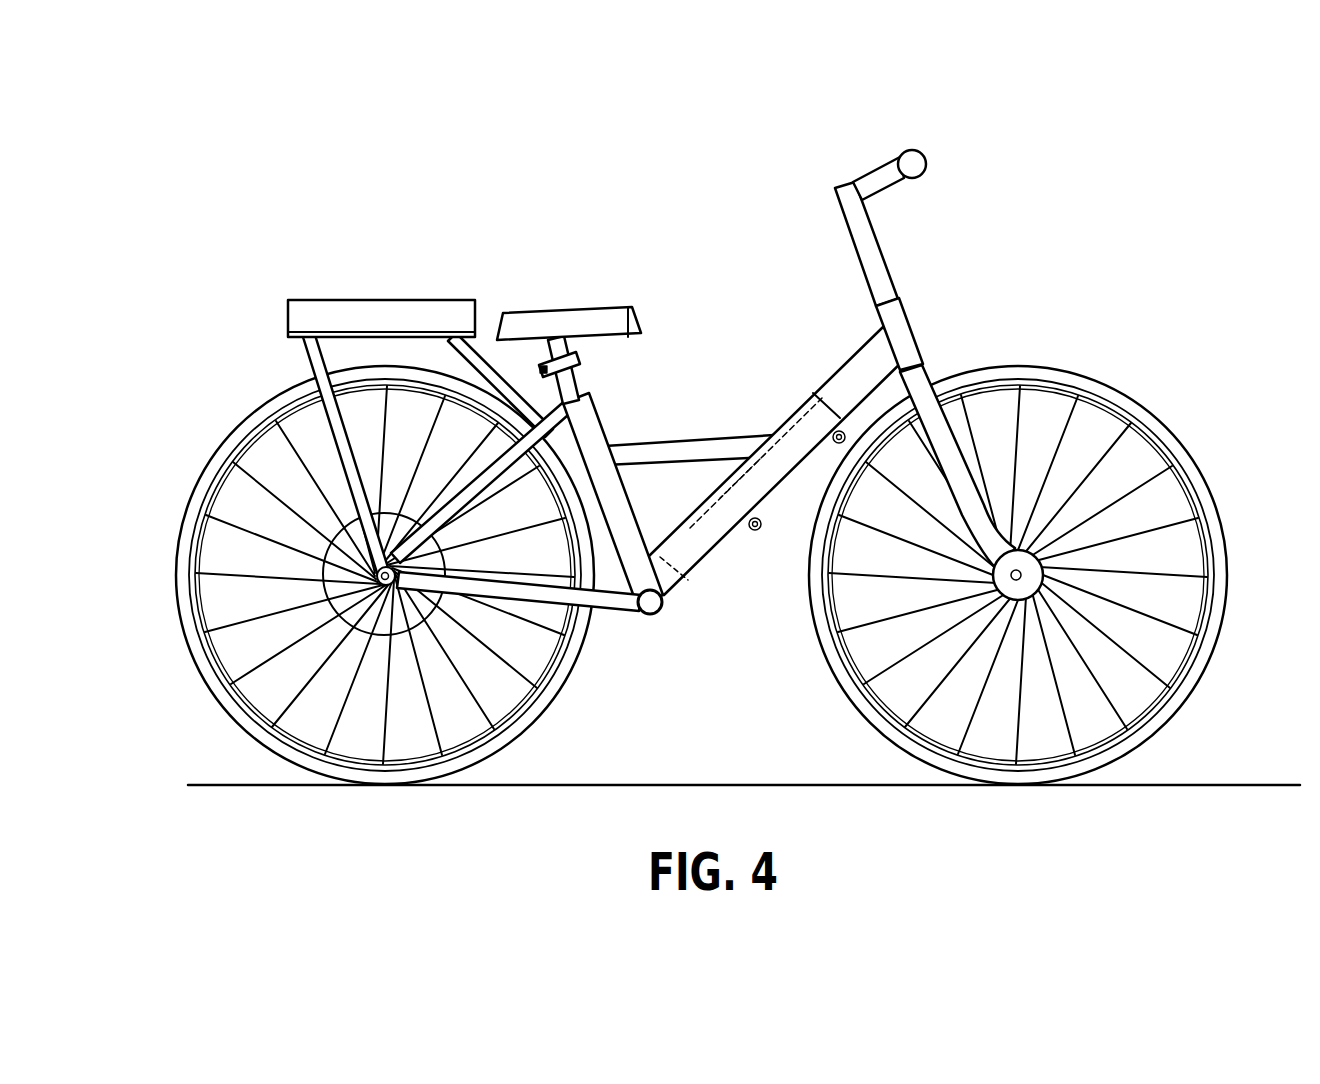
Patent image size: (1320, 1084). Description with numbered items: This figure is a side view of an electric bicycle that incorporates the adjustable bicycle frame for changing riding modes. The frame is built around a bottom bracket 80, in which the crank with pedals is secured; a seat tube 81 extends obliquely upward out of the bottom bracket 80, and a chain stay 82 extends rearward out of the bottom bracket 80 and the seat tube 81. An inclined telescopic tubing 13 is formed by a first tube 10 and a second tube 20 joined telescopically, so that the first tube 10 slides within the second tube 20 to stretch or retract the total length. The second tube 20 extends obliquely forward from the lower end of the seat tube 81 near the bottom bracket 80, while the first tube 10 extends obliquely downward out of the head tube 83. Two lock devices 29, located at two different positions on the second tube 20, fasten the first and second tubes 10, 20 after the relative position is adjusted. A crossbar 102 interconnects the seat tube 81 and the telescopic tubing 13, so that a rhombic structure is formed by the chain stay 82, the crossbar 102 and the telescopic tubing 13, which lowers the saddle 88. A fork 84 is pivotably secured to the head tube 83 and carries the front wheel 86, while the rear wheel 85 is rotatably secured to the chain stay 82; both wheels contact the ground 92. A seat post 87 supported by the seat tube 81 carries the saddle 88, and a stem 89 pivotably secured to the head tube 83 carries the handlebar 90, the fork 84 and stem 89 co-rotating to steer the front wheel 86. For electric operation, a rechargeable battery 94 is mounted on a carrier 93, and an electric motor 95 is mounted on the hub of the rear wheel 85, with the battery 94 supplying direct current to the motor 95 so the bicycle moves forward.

The first tube 10 is at (838, 368).
The telescopic tubing 13 is at (780, 405).
The second tube 20 is at (672, 608).
The lock devices 29 is at (755, 531).
The bottom bracket 80 is at (652, 616).
The seat tube 81 is at (578, 380).
The chain stay 82 is at (605, 606).
The head tube 83 is at (905, 325).
The fork 84 is at (930, 366).
The rear wheel 85 is at (203, 480).
The front wheel 86 is at (1168, 432).
The seat post 87 is at (545, 357).
The saddle 88 is at (570, 314).
The stem 89 is at (877, 245).
The handlebar 90 is at (912, 150).
The ground 92 is at (1262, 783).
The carrier 93 is at (290, 337).
The rechargeable battery 94 is at (345, 305).
The electric motor 95 is at (382, 588).
The crossbar 102 is at (652, 448).